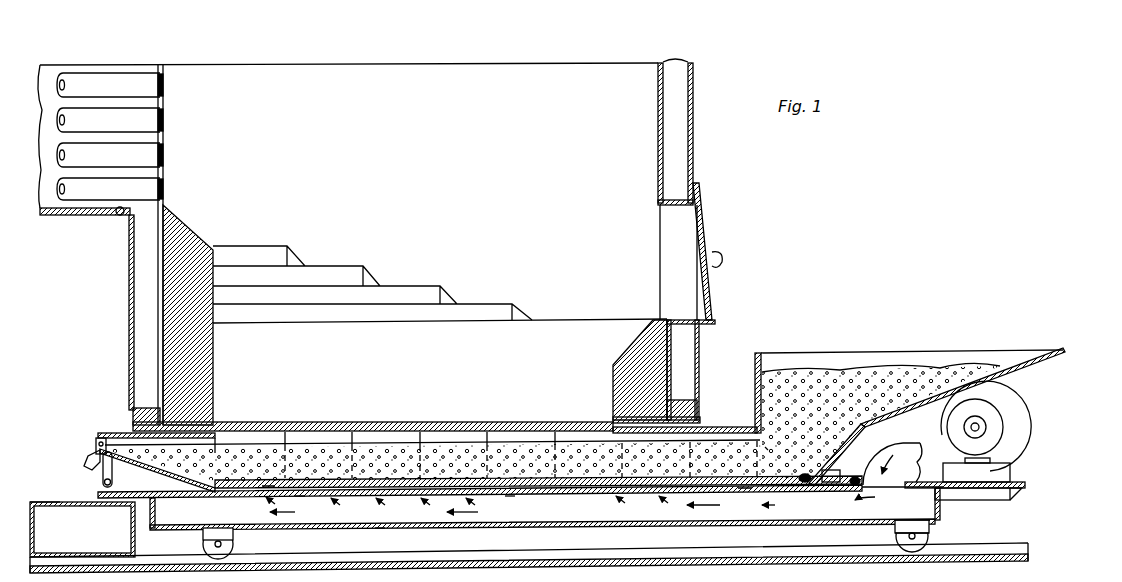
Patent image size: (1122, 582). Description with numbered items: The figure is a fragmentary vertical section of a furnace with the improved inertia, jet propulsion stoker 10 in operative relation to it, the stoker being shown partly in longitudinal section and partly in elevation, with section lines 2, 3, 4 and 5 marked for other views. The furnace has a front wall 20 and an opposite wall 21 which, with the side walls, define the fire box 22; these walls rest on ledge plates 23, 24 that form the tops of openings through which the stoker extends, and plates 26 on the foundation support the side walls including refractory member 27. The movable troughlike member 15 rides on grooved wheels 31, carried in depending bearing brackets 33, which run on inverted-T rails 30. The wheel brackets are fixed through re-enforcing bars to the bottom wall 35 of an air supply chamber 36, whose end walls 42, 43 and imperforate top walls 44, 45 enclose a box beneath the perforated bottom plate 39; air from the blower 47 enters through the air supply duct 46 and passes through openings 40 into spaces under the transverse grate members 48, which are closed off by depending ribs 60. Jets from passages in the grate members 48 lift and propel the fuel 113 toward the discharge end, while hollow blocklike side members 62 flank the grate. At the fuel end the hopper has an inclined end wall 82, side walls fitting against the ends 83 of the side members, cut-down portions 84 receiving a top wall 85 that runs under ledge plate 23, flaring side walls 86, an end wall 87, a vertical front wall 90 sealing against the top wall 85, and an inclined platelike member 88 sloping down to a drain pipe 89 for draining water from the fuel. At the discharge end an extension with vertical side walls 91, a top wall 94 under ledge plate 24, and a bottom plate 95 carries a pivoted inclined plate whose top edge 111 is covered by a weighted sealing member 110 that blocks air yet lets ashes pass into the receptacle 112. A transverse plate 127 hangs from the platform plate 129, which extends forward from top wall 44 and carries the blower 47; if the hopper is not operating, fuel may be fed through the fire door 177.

The apparatus 10 is at (110, 402).
The troughlike member 15 is at (506, 442).
The front wall 20 is at (630, 349).
The wall opposite the front wall 21 is at (200, 353).
The fire box 22 is at (457, 260).
The ledge plate 23 is at (703, 418).
The ledge plate 24 is at (130, 434).
The plates 26 is at (376, 430).
The refractory member 27 is at (549, 340).
The rails 30 is at (182, 575).
The grooved wheels 31 is at (236, 544).
The bearing brackets 33 is at (895, 538).
The bottom wall 35 is at (380, 530).
The air supply chamber 36 is at (620, 506).
The bottom plate 39 is at (510, 496).
The openings 40 is at (566, 490).
The end wall 42 is at (936, 505).
The end wall 43 is at (150, 517).
The top wall 44 is at (848, 468).
The top wall 45 is at (185, 498).
The air supply duct 46 is at (898, 442).
The blower 47 is at (998, 420).
The grate members 48 is at (266, 484).
The depending ribs 60 is at (300, 496).
The side members 62 is at (290, 432).
The inclined end wall 82 is at (847, 455).
The ends of the end members 83 is at (765, 447).
The cut-down portion 84 is at (612, 432).
The top wall 85 is at (706, 434).
The flaring side walls 86 is at (864, 362).
The end wall 87 is at (1022, 364).
The inclined platelike member 88 is at (778, 486).
The drain pipe 89 is at (832, 478).
The vertical front wall 90 is at (760, 360).
The vertical side walls 91 is at (131, 498).
The top wall 94 is at (215, 400).
The bottom plate 95 is at (200, 488).
The sealing member 110 is at (100, 486).
The top edge 111 is at (88, 462).
The receptacle 112 is at (42, 494).
The fuel 113 is at (463, 448).
The transversely extending plate 127 is at (1006, 500).
The plate 129 is at (1027, 484).
The fire door 177 is at (708, 230).
The section line 2- 2 is at (100, 429).
The section line 3- 3 is at (550, 243).
The section line 4- 4 is at (758, 413).
The section line 5- 5 is at (1098, 315).